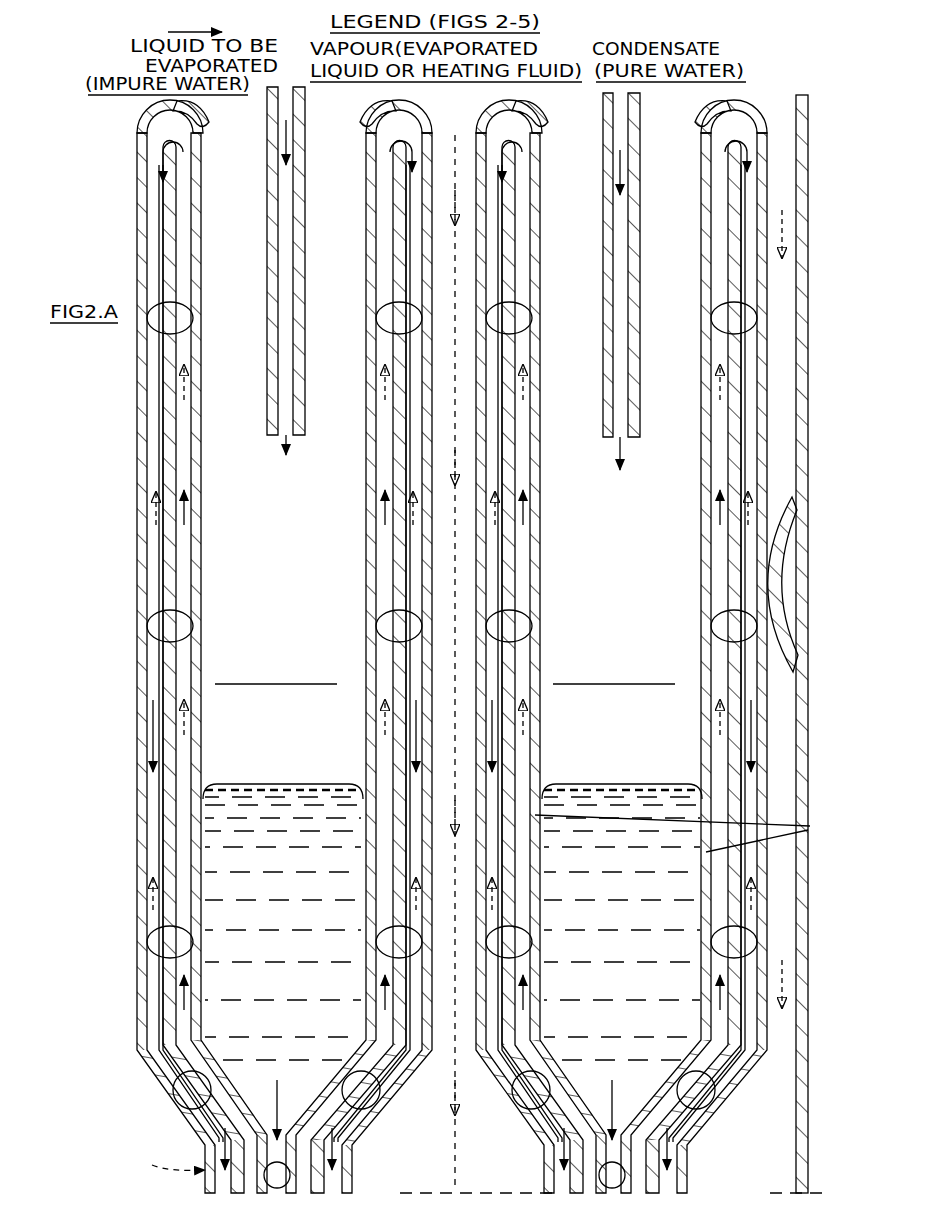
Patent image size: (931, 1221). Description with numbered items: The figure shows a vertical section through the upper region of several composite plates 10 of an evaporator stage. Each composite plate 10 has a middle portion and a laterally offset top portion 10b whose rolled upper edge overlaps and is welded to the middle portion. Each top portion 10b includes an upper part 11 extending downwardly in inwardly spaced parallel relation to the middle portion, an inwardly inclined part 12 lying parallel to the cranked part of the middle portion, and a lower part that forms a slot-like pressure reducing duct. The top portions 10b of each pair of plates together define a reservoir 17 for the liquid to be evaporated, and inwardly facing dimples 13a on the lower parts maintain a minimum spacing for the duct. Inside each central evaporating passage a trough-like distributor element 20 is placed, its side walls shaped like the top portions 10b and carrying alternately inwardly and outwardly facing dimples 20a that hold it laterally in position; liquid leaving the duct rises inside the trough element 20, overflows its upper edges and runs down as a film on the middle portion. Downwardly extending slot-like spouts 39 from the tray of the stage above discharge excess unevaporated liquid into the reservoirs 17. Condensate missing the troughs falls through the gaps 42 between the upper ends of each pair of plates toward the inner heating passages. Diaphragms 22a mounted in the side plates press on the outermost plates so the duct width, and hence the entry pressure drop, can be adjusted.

The composite plate 10 is at (165, 1161).
The top portion 10b is at (690, 833).
The upper part 11 is at (200, 500).
The inwardly inclined part 12 is at (302, 1093).
The inwardly facing dimples 13a is at (280, 1174).
The reservoir 17 is at (452, 819).
The trough-like distributor element 20 is at (150, 704).
The dimples 20a is at (752, 342).
The diaphragms 22a is at (786, 545).
The slot-like spouts 39 is at (268, 178).
The gaps 42 is at (458, 130).